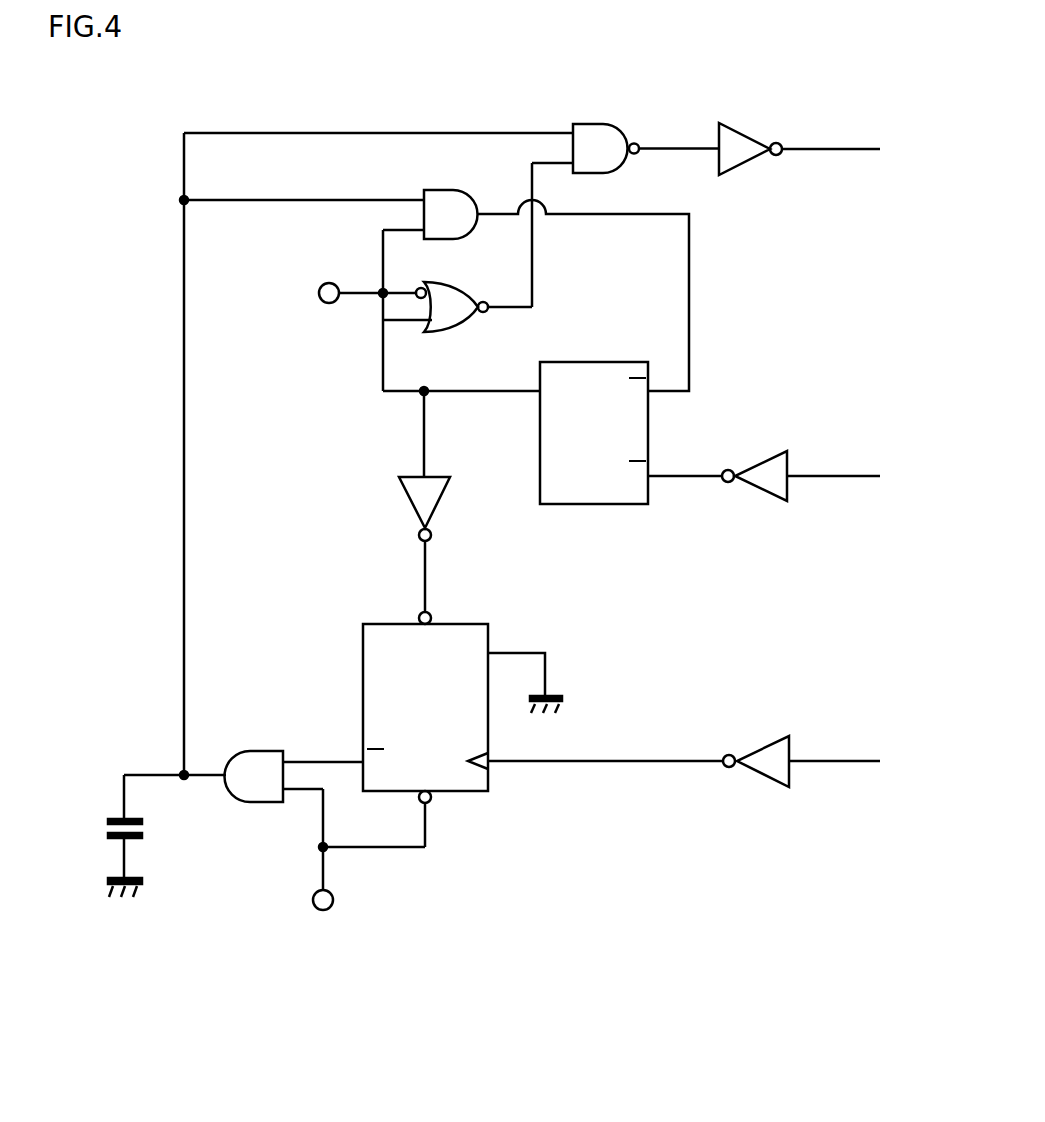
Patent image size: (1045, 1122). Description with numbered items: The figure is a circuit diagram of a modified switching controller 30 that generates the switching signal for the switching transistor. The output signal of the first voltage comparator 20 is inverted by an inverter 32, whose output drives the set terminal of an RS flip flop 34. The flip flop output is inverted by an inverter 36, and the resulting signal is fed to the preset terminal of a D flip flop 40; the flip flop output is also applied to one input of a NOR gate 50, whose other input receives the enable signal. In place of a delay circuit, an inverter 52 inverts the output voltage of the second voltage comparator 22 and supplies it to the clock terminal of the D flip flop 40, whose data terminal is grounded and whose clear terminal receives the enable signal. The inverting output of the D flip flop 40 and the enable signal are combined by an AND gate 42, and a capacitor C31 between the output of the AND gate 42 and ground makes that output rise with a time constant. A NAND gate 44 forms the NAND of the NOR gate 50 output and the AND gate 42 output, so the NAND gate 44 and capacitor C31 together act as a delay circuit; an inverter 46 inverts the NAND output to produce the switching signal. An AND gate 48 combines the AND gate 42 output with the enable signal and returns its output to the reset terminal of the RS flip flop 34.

The switching controller 30 is at (530, 1068).
The first voltage comparator 20 is at (849, 470).
The second voltage comparator 22 is at (850, 756).
The inverter 32 is at (762, 490).
The RS flip flop 34 is at (597, 362).
The inverter 36 is at (440, 502).
The D flip flop 40 is at (363, 677).
The AND gate 42 is at (258, 803).
The NAND gate 44 is at (600, 124).
The inverter 46 is at (747, 137).
The AND gate 48 is at (448, 190).
The NOR gate 50 is at (440, 282).
The inverter 52 is at (764, 778).
The capacitor C31 is at (103, 836).